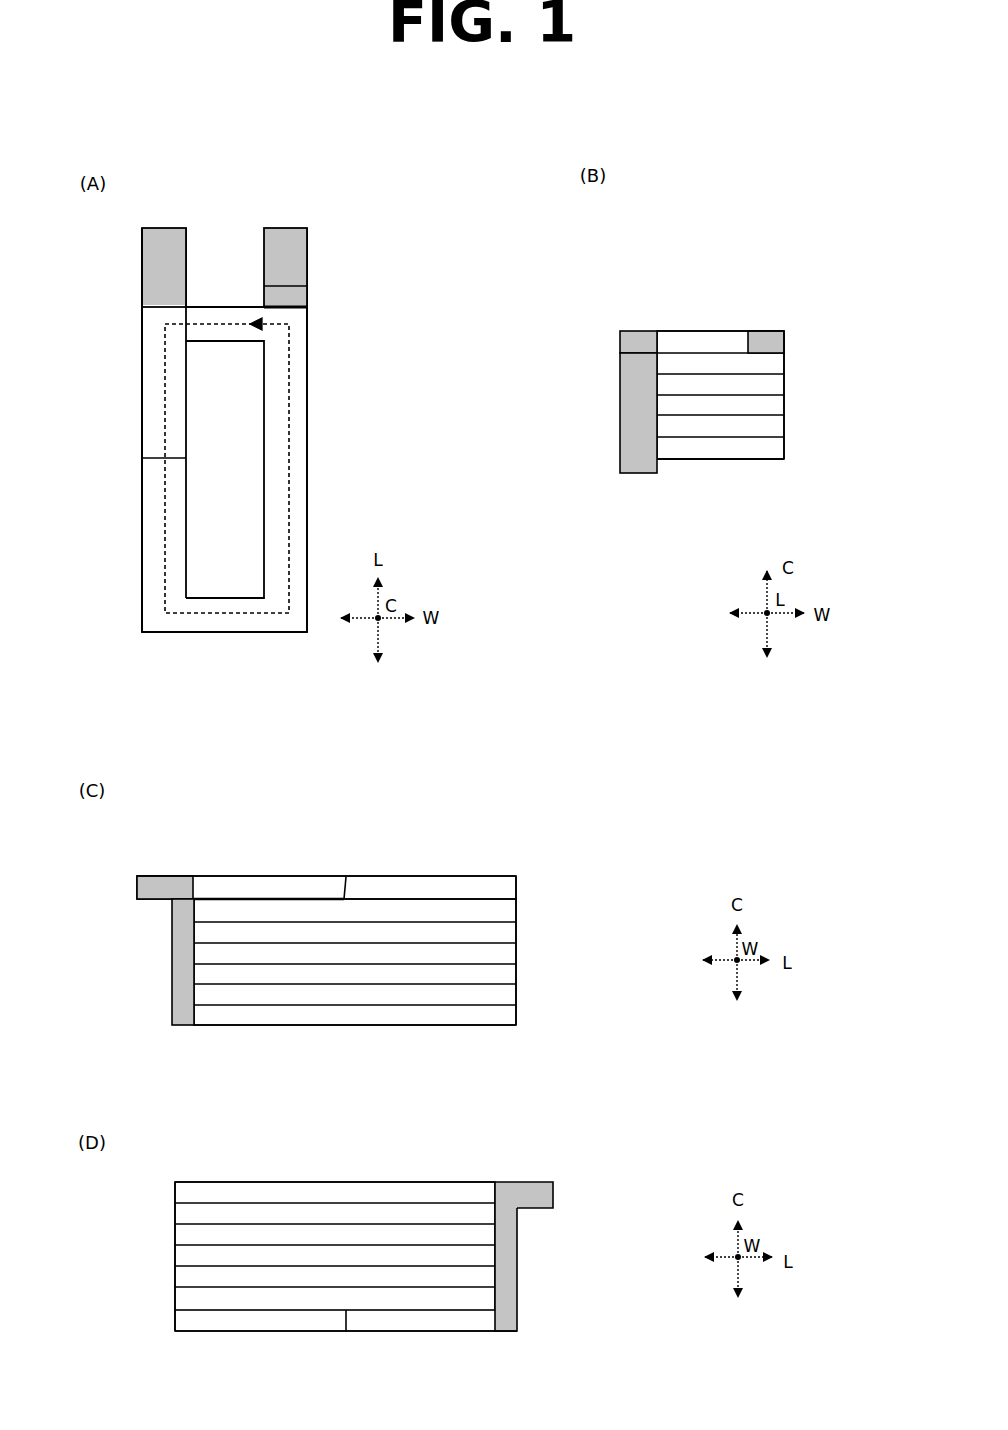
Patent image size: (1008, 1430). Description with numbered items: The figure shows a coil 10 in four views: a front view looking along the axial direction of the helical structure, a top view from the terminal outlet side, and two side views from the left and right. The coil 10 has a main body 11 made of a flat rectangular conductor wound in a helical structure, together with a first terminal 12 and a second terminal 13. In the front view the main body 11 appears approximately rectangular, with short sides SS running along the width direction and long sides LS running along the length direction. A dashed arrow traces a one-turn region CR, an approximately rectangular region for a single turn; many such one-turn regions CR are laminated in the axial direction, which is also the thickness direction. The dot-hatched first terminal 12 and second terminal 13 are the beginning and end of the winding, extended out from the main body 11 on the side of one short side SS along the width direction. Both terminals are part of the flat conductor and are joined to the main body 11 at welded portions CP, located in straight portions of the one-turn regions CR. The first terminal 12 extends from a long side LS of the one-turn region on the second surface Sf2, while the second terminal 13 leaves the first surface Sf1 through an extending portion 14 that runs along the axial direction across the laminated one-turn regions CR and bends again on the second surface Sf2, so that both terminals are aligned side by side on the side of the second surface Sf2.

The coil 10 is at (798, 137).
The main body 11 is at (307, 435).
The first terminal 12 is at (142, 282).
The second terminal 13 is at (300, 253).
The extending portion 14 is at (300, 300).
The welded portion CP is at (172, 458).
The one-turn region CR is at (293, 367).
The short side SS is at (227, 300).
The first surface Sf1 is at (752, 460).
The second surface Sf2 is at (150, 530).
The long side LS is at (262, 1352).